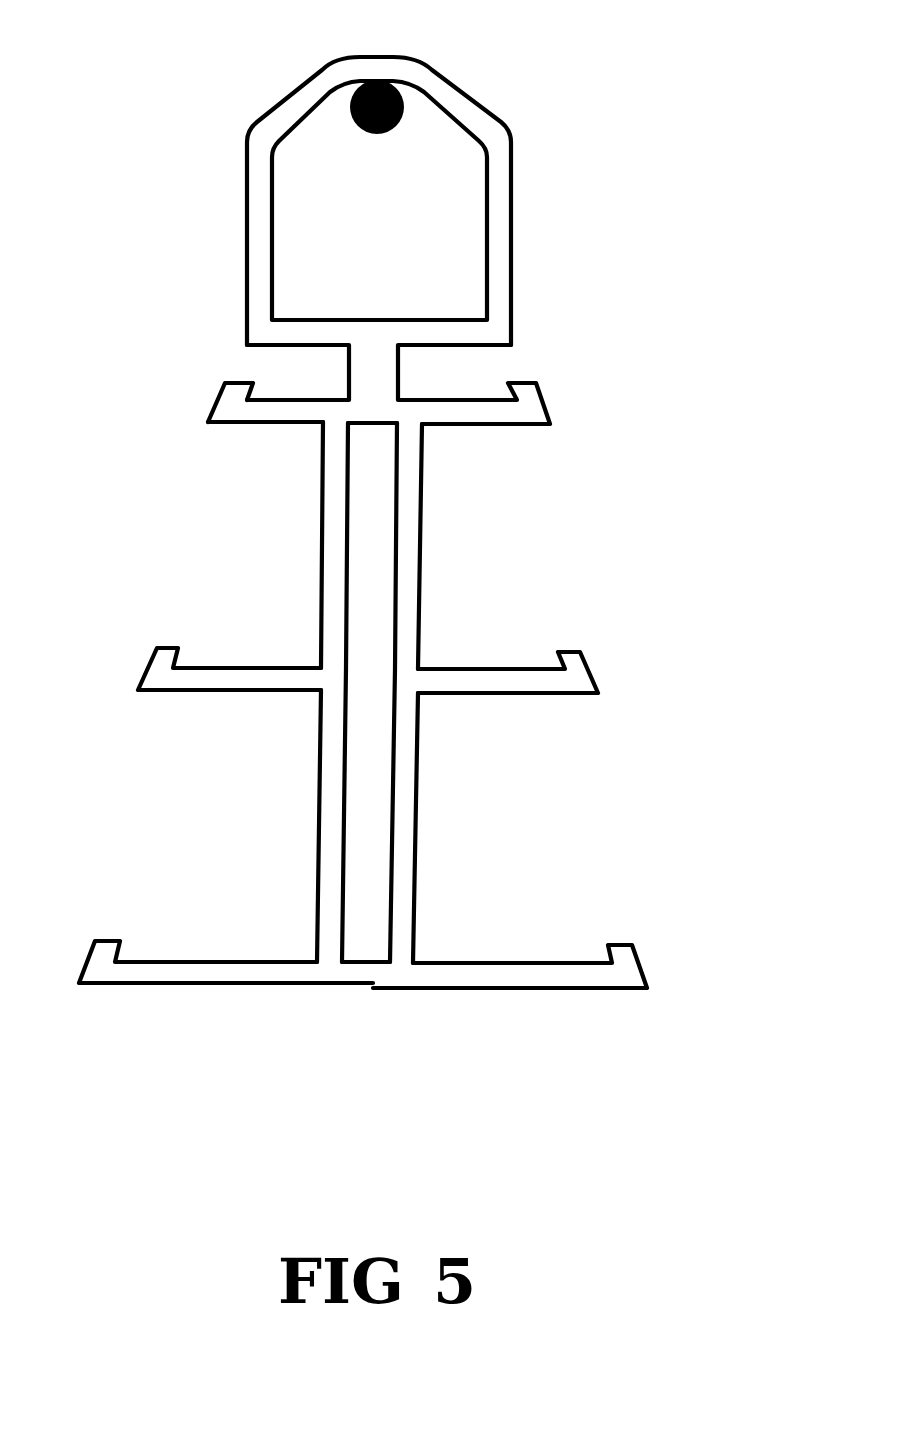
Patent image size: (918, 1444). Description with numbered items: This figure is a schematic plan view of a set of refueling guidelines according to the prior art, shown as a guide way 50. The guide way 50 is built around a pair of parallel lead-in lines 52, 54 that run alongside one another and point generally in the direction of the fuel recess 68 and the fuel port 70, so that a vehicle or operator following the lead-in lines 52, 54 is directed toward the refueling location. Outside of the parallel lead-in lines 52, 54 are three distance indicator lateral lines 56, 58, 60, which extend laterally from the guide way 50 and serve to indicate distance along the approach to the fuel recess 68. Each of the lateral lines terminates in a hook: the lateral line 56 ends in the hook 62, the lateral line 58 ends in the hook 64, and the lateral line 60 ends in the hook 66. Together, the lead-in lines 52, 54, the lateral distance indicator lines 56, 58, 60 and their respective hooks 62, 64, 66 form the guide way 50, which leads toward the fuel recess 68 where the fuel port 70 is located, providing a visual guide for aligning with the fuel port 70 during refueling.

The guide way 50 is at (172, 810).
The parallel lead-in line 52 is at (323, 793).
The parallel lead-in line 54 is at (405, 790).
The distance indicator lateral line 56 is at (213, 966).
The distance indicator lateral line 58 is at (243, 673).
The distance indicator lateral line 60 is at (254, 410).
The hook 62 is at (620, 955).
The hook 64 is at (572, 660).
The hook 66 is at (234, 393).
The fuel recess 68 is at (403, 270).
The fuel port 70 is at (403, 92).